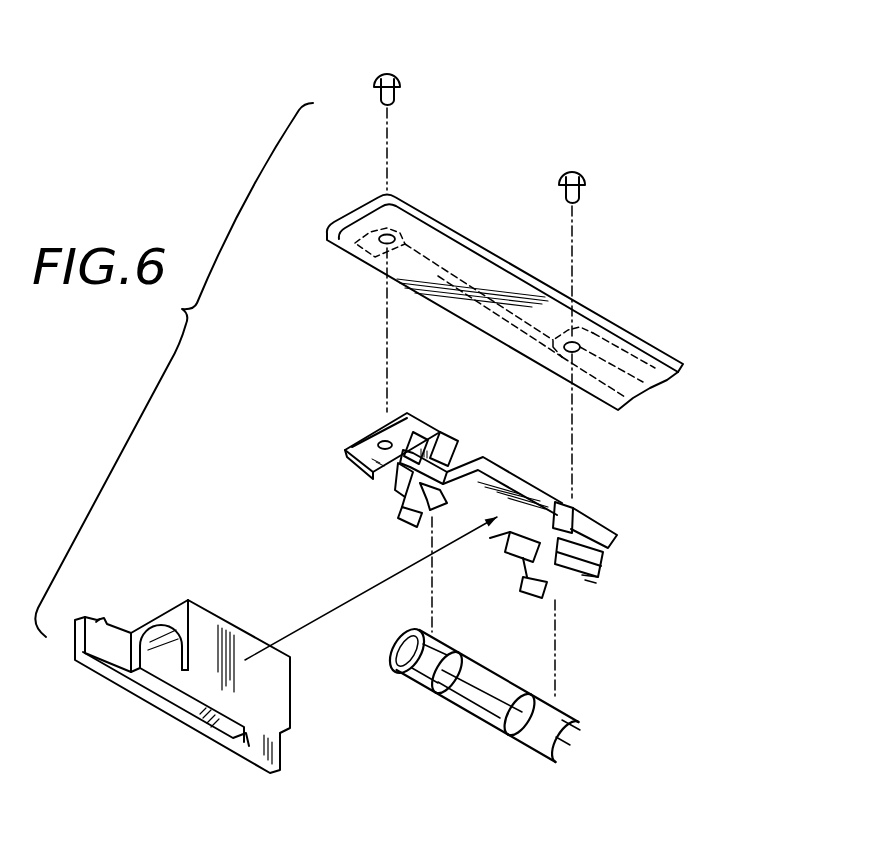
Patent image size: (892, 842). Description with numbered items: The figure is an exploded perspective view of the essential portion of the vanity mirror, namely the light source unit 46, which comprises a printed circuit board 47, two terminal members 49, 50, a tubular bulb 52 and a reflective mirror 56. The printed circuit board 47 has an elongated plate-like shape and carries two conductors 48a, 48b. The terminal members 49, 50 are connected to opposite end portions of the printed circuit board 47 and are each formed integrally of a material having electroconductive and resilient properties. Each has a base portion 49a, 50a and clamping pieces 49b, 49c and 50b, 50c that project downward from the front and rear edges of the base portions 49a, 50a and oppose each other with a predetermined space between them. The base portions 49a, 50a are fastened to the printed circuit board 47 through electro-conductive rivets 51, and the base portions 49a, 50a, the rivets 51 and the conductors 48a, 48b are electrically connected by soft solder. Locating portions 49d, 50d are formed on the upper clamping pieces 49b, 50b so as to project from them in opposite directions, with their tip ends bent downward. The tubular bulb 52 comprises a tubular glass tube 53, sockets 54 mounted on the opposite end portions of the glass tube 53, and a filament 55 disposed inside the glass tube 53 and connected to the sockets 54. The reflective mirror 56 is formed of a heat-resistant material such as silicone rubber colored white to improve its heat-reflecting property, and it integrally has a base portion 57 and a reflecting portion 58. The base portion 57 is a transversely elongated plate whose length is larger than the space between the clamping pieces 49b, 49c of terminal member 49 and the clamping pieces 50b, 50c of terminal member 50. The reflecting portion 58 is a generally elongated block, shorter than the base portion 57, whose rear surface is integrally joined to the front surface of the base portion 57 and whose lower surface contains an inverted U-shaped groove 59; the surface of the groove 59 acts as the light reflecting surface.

The light source unit 46 is at (214, 445).
The printed circuit board 47 is at (612, 332).
The conductor 48a is at (431, 267).
The conductor 48b is at (655, 350).
The terminal member 49 is at (424, 449).
The base portion 49a is at (371, 430).
The clamping piece 49b is at (472, 458).
The clamping piece 49c is at (395, 500).
The locating portion 49d is at (415, 426).
The terminal member 50 is at (599, 558).
The base portion 50a is at (590, 532).
The clamping piece 50b is at (583, 580).
The clamping piece 50c is at (548, 597).
The locating portion 50d is at (608, 563).
The electro-conductive rivet 51 is at (387, 72).
The tubular bulb 52 is at (481, 718).
The glass tube 53 is at (488, 725).
The socket 54 is at (413, 680).
The filament 55 is at (460, 710).
The reflective mirror 56 is at (182, 655).
The base portion 57 is at (112, 647).
The reflecting portion 58 is at (205, 640).
The groove 59 is at (157, 655).